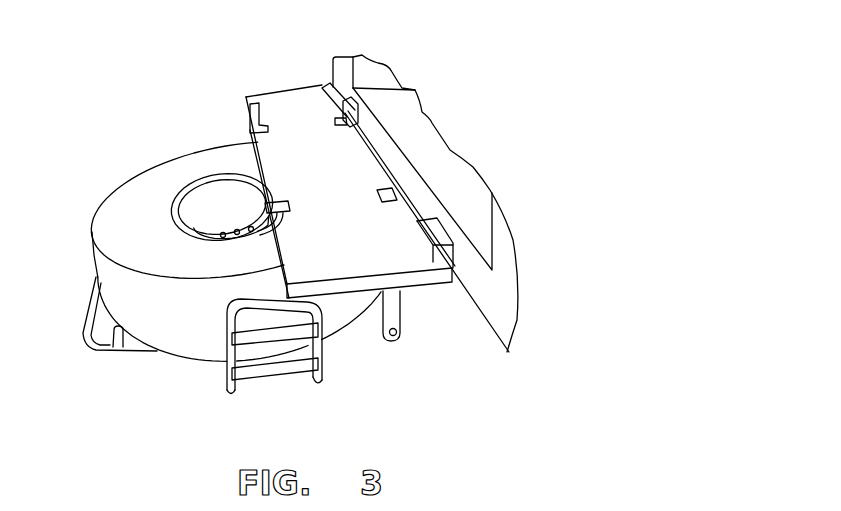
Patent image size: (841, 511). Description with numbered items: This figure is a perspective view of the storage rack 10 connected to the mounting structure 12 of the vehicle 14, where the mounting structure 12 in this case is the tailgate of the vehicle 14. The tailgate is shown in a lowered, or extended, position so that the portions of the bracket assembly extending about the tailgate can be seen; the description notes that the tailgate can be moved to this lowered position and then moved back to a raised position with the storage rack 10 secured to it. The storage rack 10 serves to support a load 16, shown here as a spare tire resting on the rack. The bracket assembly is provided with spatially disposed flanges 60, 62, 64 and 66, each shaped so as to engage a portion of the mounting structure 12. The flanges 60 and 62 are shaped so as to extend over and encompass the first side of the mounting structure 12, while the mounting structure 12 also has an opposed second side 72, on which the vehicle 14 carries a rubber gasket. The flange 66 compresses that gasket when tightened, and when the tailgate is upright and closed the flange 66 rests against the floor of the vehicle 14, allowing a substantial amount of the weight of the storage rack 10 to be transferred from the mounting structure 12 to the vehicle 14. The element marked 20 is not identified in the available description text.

The storage rack 10 is at (100, 375).
The mounting structure 12 is at (264, 94).
The vehicle 14 is at (381, 64).
The load 16 is at (142, 180).
The support bracket 20 is at (248, 119).
The flange 60 is at (255, 118).
The flange 62 is at (290, 204).
The flange 64 is at (400, 178).
The flange 66 is at (328, 96).
The second side 72 is at (347, 87).